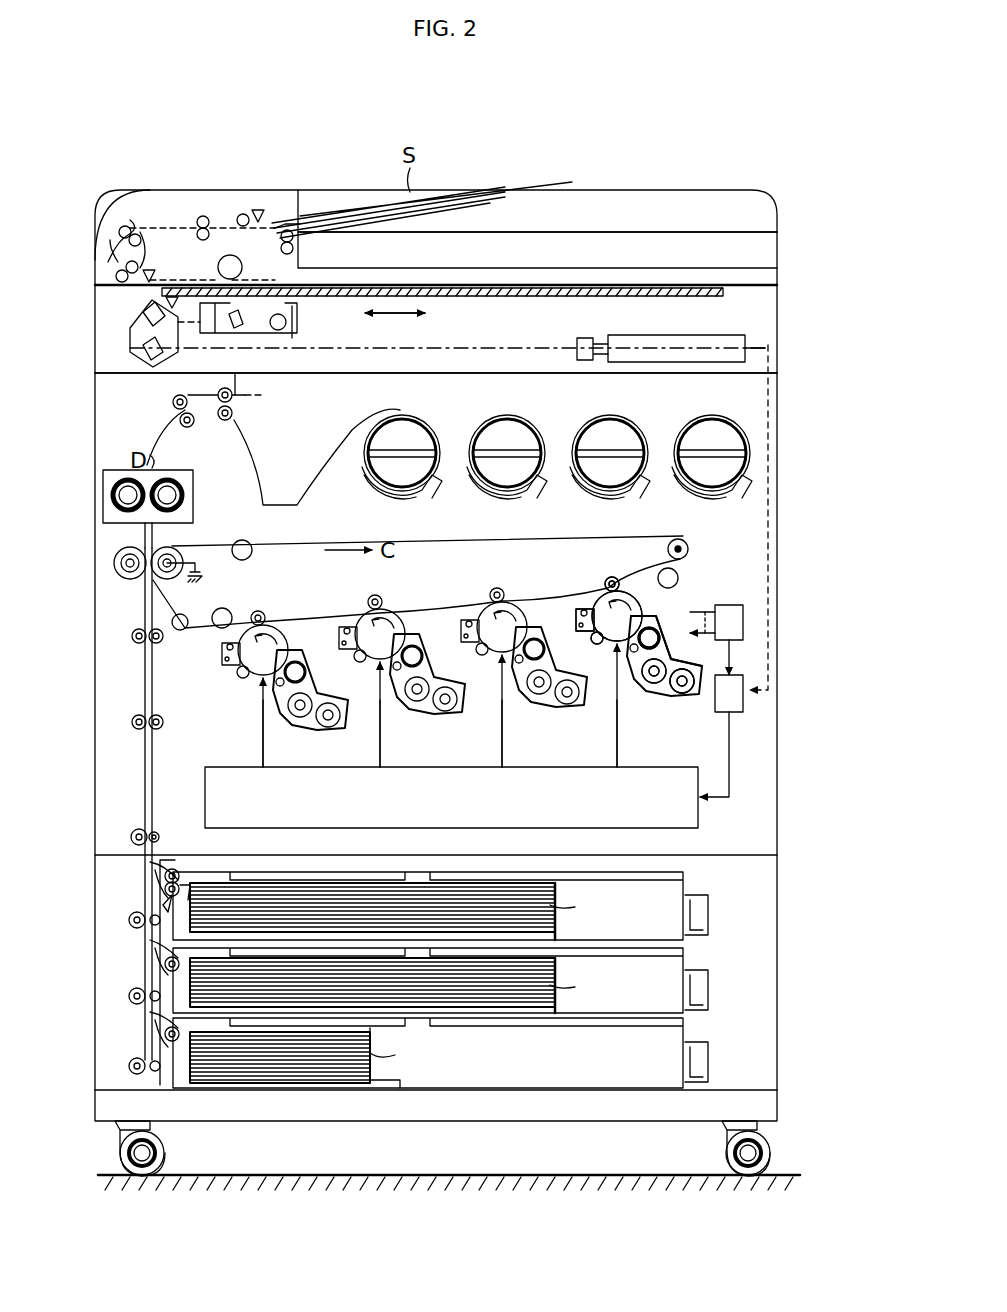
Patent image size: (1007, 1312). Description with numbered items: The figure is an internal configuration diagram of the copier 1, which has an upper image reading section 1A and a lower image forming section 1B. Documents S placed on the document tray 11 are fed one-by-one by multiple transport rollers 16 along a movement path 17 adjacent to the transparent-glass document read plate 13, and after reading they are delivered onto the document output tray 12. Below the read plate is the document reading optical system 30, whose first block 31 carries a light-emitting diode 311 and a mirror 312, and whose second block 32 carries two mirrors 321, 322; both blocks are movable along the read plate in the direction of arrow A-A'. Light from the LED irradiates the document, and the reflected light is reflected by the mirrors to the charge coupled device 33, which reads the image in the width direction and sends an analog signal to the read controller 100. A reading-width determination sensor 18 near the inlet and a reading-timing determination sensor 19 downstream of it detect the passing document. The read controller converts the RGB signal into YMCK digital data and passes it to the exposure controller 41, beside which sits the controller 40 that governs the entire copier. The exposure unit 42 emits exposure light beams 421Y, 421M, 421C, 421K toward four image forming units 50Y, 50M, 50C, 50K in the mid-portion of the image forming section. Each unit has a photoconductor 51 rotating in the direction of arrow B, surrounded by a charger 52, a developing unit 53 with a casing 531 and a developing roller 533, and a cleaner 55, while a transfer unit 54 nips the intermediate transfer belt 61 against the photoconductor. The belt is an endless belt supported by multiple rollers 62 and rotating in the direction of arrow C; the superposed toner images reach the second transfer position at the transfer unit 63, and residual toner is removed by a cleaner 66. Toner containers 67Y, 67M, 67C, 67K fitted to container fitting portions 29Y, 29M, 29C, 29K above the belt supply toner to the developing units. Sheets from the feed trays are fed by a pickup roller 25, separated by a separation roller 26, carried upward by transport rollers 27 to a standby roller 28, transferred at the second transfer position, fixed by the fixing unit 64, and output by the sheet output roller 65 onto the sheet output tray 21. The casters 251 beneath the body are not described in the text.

The copier 1 is at (762, 138).
The image reading section 1A is at (802, 268).
The image forming section 1B is at (802, 557).
The document tray 11 is at (515, 190).
The document output tray 12 is at (612, 265).
The document read plate 13 is at (690, 285).
The transport rollers 16 is at (120, 226).
The movement path 17 is at (245, 214).
The reading-width determination sensor 18 is at (262, 208).
The reading-timing determination sensor 19 is at (158, 268).
The sheet output tray 21 is at (775, 395).
The pickup roller 25 is at (185, 865).
The caster 251 is at (166, 1153).
The separation roller 26 is at (150, 880).
The transport rollers 27 is at (130, 722).
The standby roller 28 is at (130, 636).
The container fitting portion 29K is at (394, 490).
The container fitting portion 29C is at (498, 490).
The container fitting portion 29M is at (600, 490).
The container fitting portion 29Y is at (700, 500).
The document reading optical system 30 is at (128, 348).
The first block 31 is at (288, 322).
The light-emitting diode 311 is at (288, 328).
The mirror 312 is at (240, 326).
The second block 32 is at (135, 330).
The mirror 321 is at (148, 312).
The mirror 322 is at (150, 358).
The charge coupled device 33 is at (585, 338).
The controller 40 is at (745, 617).
The exposure controller 41 is at (745, 700).
The exposure unit 42 is at (700, 822).
The exposure light beam 421K is at (262, 752).
The exposure light beam 421C is at (378, 752).
The exposure light beam 421M is at (500, 752).
The exposure light beam 421Y is at (615, 752).
The image forming unit 50K is at (300, 642).
The image forming unit 50C is at (418, 630).
The image forming unit 50M is at (488, 595).
The image forming unit 50Y is at (590, 598).
The photoconductor 51 is at (612, 645).
The charger 52 is at (598, 645).
The developing unit 53 is at (648, 605).
The casing 531 is at (690, 674).
The developing roller 533 is at (658, 632).
The transfer unit 54 is at (610, 577).
The cleaner 55 is at (575, 610).
The intermediate transfer belt 61 is at (355, 535).
The rollers 62 is at (250, 555).
The transfer unit 63 is at (112, 563).
The fixing unit 64 is at (198, 492).
The sheet output roller 65 is at (227, 420).
The cleaner 66 is at (680, 580).
The toner container 67K is at (418, 428).
The toner container 67C is at (520, 428).
The toner container 67M is at (622, 428).
The toner container 67Y is at (722, 428).
The read controller 100 is at (735, 340).